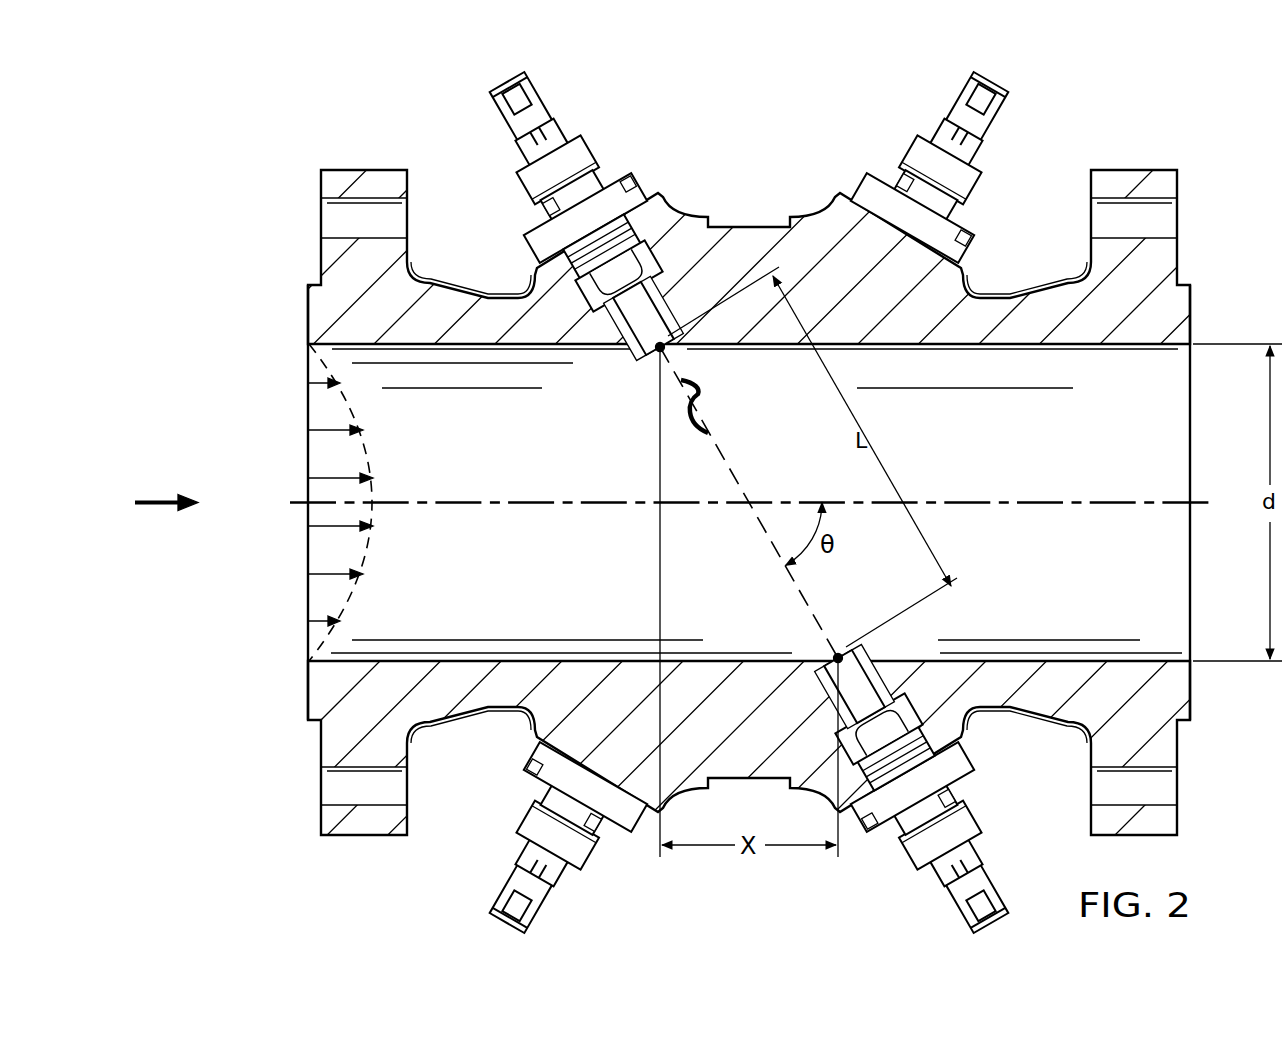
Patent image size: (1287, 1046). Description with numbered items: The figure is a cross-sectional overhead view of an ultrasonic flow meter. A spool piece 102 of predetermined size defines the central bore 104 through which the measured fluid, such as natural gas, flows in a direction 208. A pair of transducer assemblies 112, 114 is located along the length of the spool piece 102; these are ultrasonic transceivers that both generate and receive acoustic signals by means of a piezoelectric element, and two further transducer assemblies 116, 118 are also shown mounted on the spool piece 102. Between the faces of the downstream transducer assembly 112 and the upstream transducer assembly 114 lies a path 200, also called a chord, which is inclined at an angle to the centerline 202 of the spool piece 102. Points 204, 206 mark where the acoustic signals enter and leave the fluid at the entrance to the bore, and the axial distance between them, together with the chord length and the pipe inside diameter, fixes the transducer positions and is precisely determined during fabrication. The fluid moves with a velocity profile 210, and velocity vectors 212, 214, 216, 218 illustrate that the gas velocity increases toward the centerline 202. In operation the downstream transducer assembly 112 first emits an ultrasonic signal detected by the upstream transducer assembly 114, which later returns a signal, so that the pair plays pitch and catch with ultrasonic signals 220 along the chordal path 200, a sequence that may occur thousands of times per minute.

The spool piece 102 is at (749, 226).
The central bore 104 is at (1023, 453).
The transducer assembly 112 is at (950, 902).
The transducer assembly 114 is at (594, 156).
The ultrasonic transducer 116 is at (548, 902).
The ultrasonic transducer 118 is at (955, 98).
The path 200 is at (797, 597).
The centerline 202 is at (1040, 504).
The point 204 is at (840, 652).
The point 206 is at (657, 352).
The direction 208 is at (158, 499).
The velocity profile 210 is at (368, 452).
The velocity vector 212 is at (321, 430).
The velocity vector 214 is at (321, 478).
The velocity vector 216 is at (321, 526).
The velocity vector 218 is at (321, 574).
The ultrasonic signals 220 is at (700, 394).